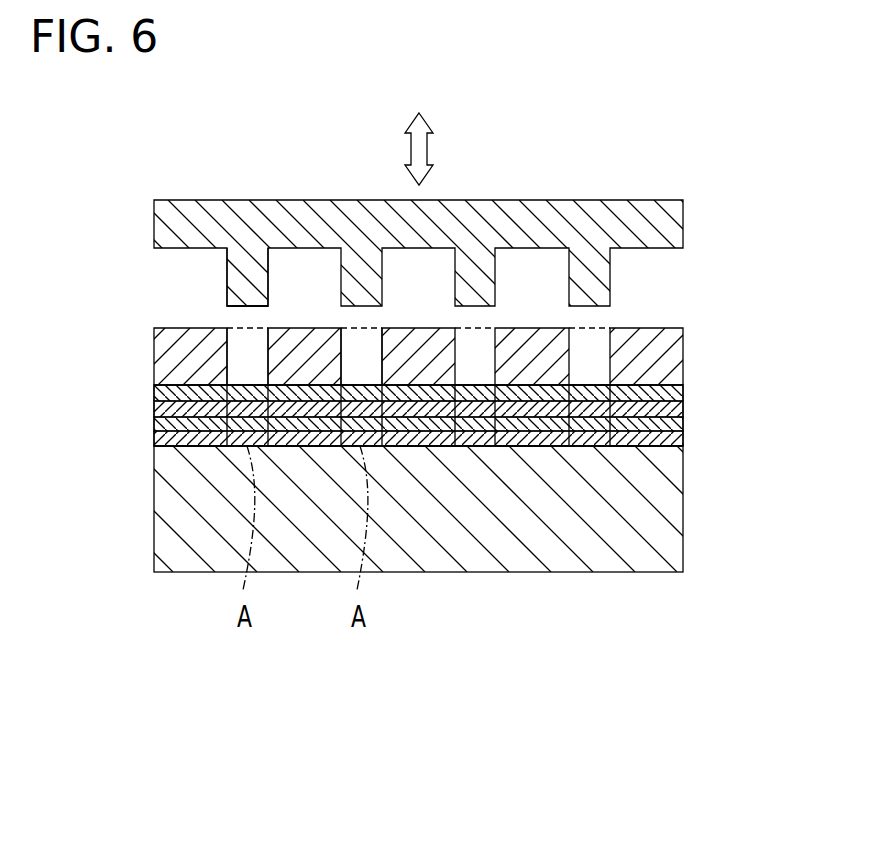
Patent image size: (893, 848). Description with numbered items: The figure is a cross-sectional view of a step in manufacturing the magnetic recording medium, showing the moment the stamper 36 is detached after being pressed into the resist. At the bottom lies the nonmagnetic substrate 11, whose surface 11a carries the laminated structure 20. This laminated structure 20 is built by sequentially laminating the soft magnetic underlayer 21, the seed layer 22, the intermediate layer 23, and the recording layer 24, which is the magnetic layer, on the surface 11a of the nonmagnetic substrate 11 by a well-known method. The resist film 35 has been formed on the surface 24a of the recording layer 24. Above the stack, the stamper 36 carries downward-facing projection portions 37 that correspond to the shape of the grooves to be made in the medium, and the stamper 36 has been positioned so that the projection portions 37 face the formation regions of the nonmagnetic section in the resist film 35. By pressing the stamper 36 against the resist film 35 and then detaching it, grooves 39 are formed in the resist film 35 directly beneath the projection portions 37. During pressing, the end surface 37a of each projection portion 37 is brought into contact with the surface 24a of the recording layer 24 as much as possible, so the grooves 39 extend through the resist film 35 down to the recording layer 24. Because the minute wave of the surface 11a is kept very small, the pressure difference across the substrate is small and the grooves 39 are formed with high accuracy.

The nonmagnetic substrate 11 is at (676, 505).
The surface of the nonmagnetic substrate 11a is at (657, 443).
The laminated structure 20 is at (55, 357).
The soft magnetic underlayer 21 is at (160, 438).
The seed layer 22 is at (160, 424).
The intermediate layer 23 is at (160, 409).
The recording layer 24 is at (160, 393).
The surface of the recording layer 24a is at (173, 385).
The resist film 35 is at (676, 362).
The stamper 36 is at (692, 217).
The projection portion 37 is at (233, 275).
The end surface of the projection portion 37a is at (247, 305).
The groove 39 is at (248, 336).